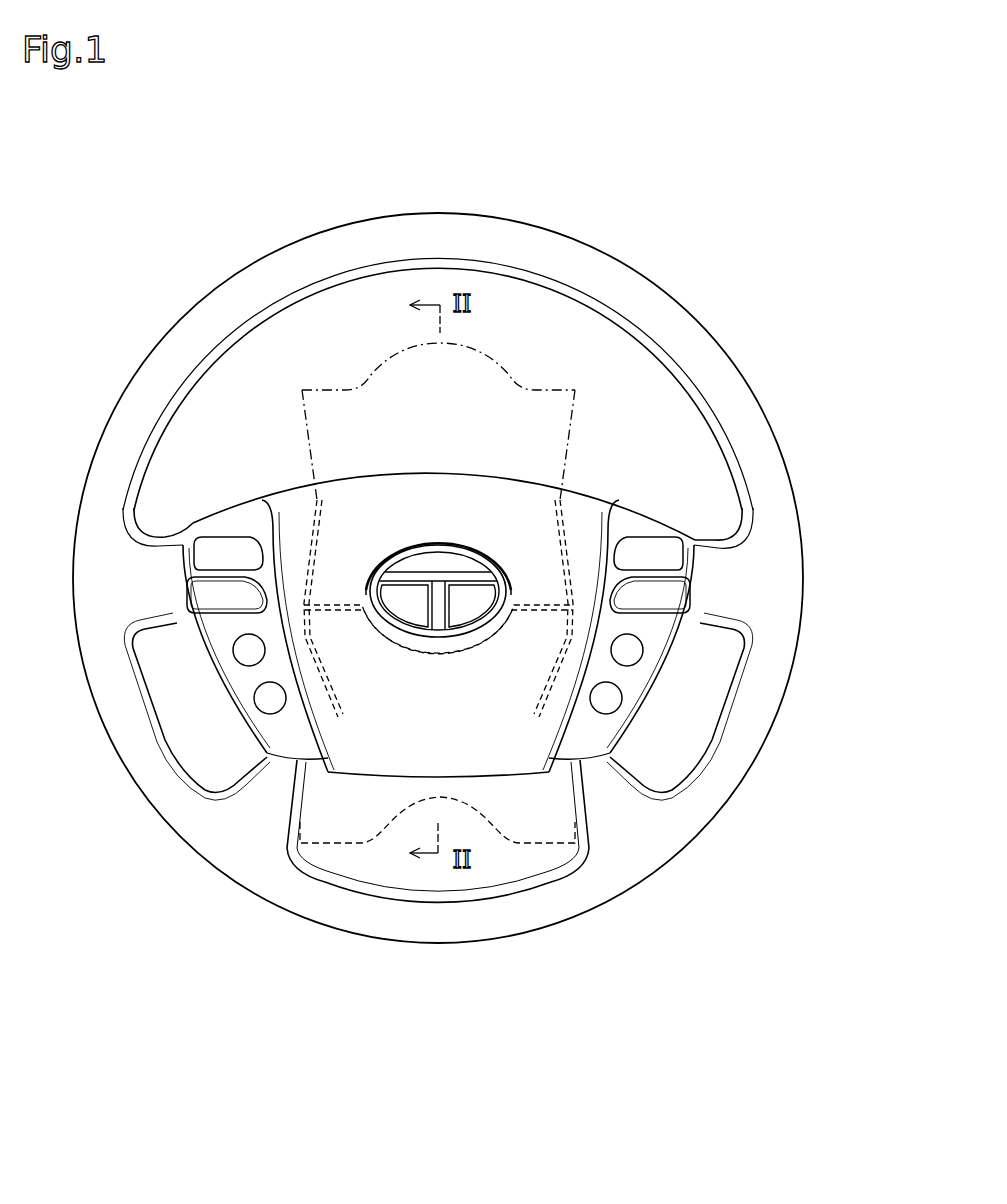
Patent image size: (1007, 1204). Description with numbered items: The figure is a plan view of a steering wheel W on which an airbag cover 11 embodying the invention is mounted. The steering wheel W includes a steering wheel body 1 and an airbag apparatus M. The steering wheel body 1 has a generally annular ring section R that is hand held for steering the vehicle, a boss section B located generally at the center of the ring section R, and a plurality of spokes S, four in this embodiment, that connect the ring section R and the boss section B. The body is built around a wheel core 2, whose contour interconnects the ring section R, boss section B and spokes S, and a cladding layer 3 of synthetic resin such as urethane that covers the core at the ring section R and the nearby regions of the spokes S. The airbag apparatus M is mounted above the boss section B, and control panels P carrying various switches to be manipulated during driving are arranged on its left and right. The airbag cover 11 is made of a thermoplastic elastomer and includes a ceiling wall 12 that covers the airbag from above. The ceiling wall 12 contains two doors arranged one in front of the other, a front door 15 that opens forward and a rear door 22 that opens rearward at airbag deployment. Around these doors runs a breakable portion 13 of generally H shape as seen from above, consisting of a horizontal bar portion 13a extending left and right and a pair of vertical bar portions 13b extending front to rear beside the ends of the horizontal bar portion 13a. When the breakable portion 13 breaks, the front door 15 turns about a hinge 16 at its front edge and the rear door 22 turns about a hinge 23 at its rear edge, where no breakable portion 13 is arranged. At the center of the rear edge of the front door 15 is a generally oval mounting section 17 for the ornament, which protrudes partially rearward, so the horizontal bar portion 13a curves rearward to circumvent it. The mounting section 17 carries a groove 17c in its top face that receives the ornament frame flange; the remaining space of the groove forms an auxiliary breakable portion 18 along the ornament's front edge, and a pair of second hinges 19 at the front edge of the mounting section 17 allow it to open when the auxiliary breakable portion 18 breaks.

The steering wheel W is at (632, 221).
The steering wheel body 1 is at (721, 336).
The wheel core 2 is at (730, 380).
The cladding layer 3 is at (660, 303).
The ring section R is at (262, 924).
The boss section B is at (583, 476).
The control panels P is at (227, 502).
The spokes S is at (168, 634).
The airbag cover 11 is at (294, 476).
The ceiling wall 12 is at (327, 720).
The breakable portion 13 is at (323, 526).
The horizontal bar portion 13a is at (351, 612).
The vertical bar portions 13b is at (311, 580).
The front door 15 is at (537, 500).
The hinge 16 is at (424, 496).
The mounting section 17 is at (438, 650).
The groove 17c is at (472, 548).
The auxiliary breakable portion 18 is at (438, 591).
The second hinges 19 is at (373, 617).
The rear door 22 is at (490, 712).
The hinge 23 is at (427, 728).
The airbag apparatus M is at (378, 799).